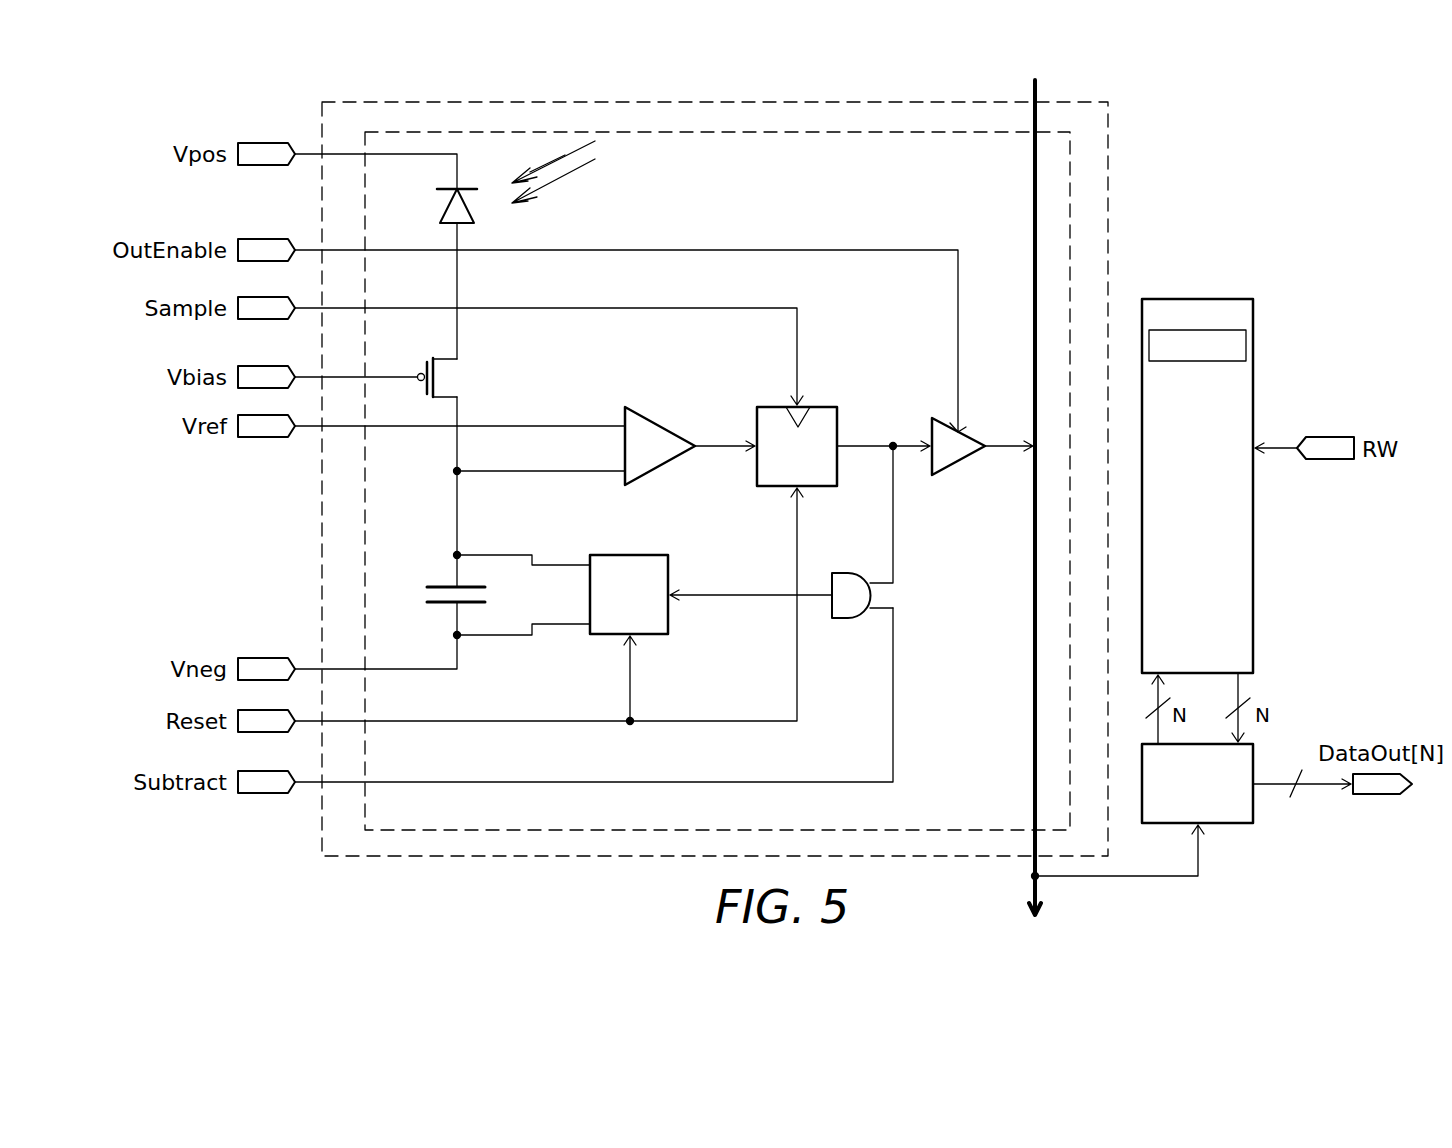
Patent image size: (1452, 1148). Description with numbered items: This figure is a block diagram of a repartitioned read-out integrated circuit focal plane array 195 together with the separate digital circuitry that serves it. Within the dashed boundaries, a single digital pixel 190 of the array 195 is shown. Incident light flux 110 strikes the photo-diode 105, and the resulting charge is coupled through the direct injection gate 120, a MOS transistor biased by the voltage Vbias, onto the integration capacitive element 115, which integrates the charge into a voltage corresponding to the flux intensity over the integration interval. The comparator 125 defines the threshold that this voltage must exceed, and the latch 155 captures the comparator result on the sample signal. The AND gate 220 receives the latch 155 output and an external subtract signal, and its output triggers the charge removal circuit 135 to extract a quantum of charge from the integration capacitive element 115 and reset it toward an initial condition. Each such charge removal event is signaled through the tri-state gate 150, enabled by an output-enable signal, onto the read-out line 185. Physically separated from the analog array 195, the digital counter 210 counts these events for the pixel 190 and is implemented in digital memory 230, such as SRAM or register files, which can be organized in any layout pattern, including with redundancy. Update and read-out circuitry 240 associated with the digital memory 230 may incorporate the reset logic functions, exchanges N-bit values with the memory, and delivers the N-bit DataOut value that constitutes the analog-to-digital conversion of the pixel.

The photo-diode 105 is at (477, 215).
The flux 110 is at (565, 173).
The integration capacitive element 115 is at (450, 585).
The direct injection gate 120 is at (450, 390).
The comparator 125 is at (640, 415).
The charge removal circuit 135 is at (668, 558).
The tri-state gate 150 is at (945, 465).
The latch 155 is at (823, 405).
The read-out line 185 is at (1033, 205).
The pixel 190 is at (1083, 288).
The focal plane array 195 is at (1122, 164).
The digital counter 210 is at (1246, 340).
The AND gate 220 is at (865, 620).
The digital memory 230 is at (1266, 381).
The update and read-out circuitry 240 is at (1232, 825).